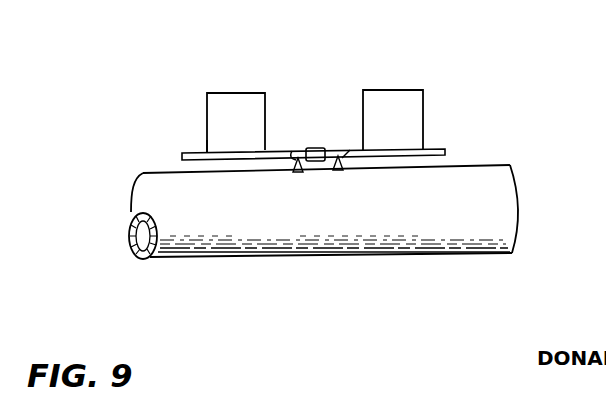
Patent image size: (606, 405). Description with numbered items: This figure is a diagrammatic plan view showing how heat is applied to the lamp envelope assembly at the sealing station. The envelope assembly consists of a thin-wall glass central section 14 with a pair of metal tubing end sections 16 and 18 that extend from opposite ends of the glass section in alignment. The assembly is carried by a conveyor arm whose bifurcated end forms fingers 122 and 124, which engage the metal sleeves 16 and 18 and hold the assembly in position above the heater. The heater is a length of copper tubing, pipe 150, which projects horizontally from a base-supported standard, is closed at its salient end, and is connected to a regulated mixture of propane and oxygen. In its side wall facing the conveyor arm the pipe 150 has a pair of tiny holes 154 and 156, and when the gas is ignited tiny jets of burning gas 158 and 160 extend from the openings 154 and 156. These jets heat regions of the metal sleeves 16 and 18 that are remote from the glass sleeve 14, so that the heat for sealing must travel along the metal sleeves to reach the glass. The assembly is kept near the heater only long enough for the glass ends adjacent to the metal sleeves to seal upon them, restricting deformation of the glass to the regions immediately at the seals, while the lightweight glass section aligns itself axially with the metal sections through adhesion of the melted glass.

The central section 14 is at (317, 148).
The end section 16 is at (193, 152).
The end section 18 is at (440, 148).
The finger 122 is at (228, 103).
The finger 124 is at (395, 100).
The pipe 150 is at (505, 218).
The hole 154 is at (296, 173).
The hole 156 is at (338, 173).
The jet of burning gas 158 is at (290, 150).
The jet of burning gas 160 is at (340, 162).